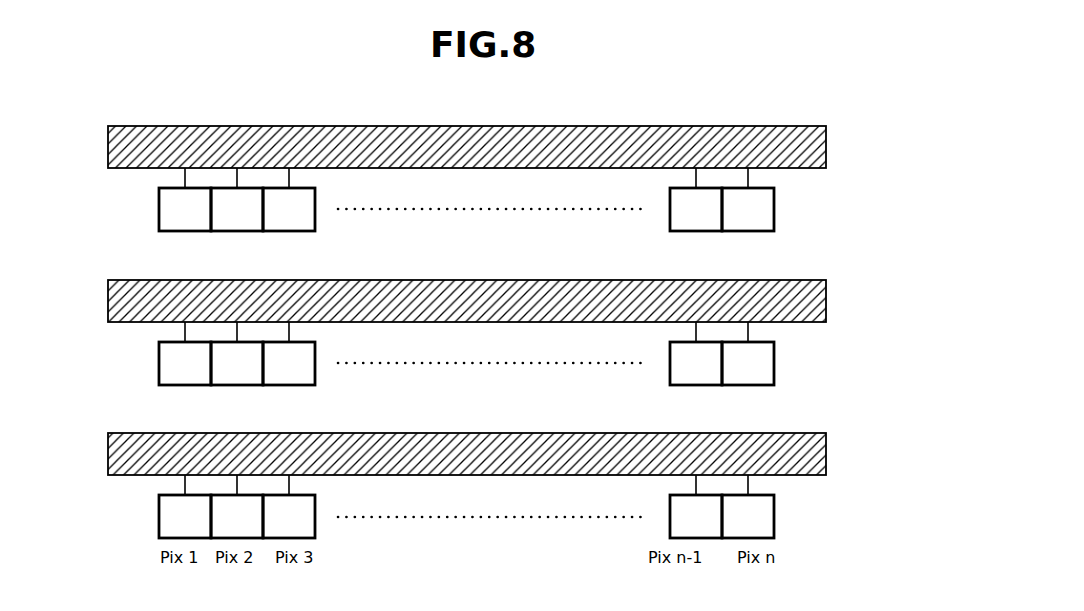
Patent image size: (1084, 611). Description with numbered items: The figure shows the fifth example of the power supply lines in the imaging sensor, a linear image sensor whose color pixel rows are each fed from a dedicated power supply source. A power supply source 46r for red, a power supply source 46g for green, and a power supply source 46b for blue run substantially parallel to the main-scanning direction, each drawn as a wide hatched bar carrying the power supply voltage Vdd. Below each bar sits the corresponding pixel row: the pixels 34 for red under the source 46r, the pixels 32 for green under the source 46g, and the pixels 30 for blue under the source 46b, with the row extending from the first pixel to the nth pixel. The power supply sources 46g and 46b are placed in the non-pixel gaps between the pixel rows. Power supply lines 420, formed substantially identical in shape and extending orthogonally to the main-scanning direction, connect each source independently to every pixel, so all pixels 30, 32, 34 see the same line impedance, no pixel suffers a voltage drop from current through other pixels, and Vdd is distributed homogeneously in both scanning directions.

The power supply source for red 46r is at (466, 111).
The power supply source for green 46g is at (466, 265).
The power supply source for blue 46b is at (466, 418).
The power supply lines 420 is at (183, 176).
The pixels for red 34 is at (775, 199).
The pixels for green 32 is at (775, 353).
The pixels for blue 30 is at (775, 506).